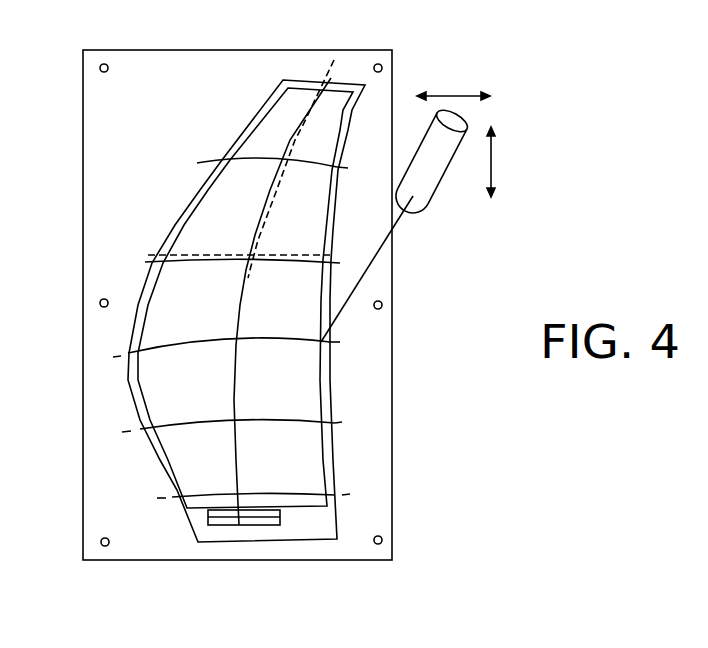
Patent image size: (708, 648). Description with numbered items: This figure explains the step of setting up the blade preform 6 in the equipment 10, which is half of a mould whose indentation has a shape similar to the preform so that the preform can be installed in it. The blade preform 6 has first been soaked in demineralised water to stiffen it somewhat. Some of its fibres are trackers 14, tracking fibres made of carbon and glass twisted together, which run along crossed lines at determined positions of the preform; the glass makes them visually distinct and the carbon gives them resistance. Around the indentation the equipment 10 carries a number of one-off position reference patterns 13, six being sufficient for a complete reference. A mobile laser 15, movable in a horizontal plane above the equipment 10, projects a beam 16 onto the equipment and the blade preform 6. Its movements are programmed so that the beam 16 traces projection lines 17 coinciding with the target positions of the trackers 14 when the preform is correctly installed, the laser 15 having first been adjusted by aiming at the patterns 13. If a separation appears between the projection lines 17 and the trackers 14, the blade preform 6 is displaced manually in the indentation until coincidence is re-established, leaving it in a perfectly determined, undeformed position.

The blade preform 6 is at (311, 459).
The equipment 10 is at (412, 87).
The position reference patterns 13 is at (100, 303).
The trackers 14 is at (259, 222).
The mobile laser 15 is at (432, 180).
The beam 16 is at (372, 258).
The projection lines 17 is at (333, 62).